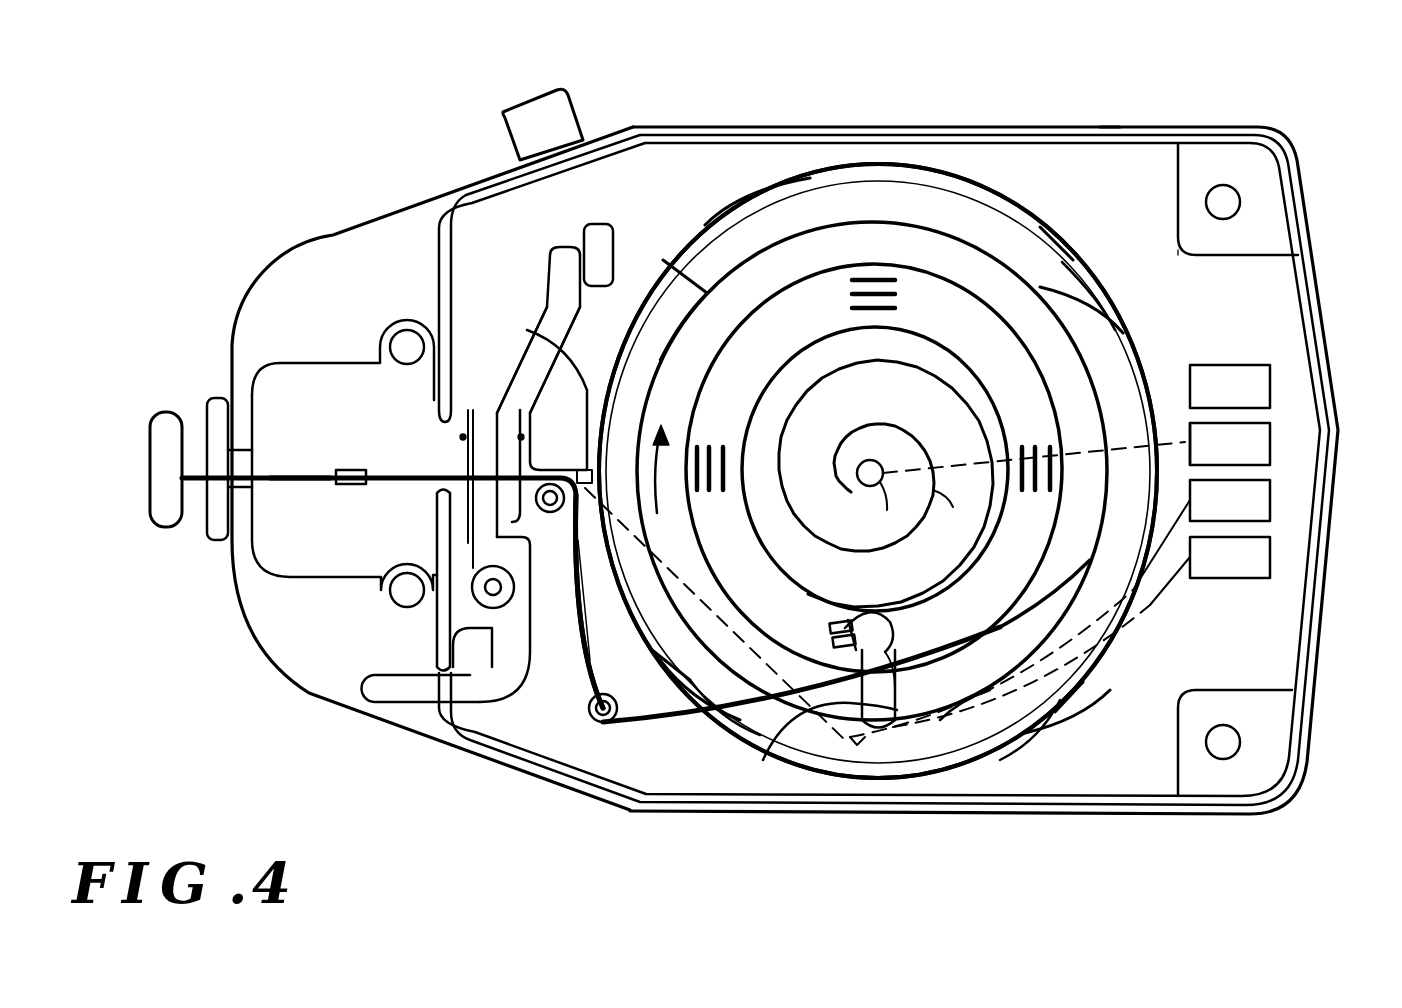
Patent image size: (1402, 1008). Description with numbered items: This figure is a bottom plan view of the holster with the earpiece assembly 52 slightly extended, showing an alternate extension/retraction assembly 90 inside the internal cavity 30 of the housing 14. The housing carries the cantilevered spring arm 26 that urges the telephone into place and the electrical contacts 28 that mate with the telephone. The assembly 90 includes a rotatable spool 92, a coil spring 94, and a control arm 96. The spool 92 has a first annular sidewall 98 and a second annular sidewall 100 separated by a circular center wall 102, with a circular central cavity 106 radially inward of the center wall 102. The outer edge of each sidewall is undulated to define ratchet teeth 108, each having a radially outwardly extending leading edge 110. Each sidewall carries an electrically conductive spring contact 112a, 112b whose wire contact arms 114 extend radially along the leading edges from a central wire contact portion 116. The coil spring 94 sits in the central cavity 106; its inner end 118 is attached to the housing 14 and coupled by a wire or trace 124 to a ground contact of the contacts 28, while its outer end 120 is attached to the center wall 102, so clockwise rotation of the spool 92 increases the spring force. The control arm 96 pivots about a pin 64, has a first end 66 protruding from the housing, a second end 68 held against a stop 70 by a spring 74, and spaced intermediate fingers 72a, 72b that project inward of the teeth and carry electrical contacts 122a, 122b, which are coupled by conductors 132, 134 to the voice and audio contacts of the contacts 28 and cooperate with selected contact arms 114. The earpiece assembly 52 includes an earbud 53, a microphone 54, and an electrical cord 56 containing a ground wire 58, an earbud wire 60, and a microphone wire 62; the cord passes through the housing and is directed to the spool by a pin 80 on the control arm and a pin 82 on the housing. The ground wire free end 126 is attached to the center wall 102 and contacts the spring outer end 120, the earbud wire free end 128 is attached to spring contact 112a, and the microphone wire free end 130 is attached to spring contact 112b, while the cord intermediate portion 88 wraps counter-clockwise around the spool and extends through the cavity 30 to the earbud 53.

The housing 14 is at (1104, 120).
The cantilevered spring arm 26 is at (212, 405).
The electrical contacts 28 is at (1276, 441).
The internal cavity 30 is at (1224, 271).
The earpiece assembly 52 is at (333, 546).
The earbud 53 is at (165, 478).
The microphone 54 is at (350, 470).
The electrical cord 56 is at (290, 476).
The insulated ground wire 58 is at (885, 612).
The insulated earbud wire 60 is at (833, 637).
The insulated microphone wire 62 is at (851, 622).
The pin 64 is at (485, 586).
The first end 66 is at (376, 686).
The second end 68 is at (548, 258).
The stop 70 is at (598, 240).
The first finger 72a is at (595, 662).
The second finger 72b is at (558, 629).
The spring 74 is at (462, 470).
The pin 80 is at (550, 490).
The pin 82 is at (612, 722).
The intermediate portion 88 is at (667, 718).
The extension/retraction assembly 90 is at (1262, 322).
The spool 92 is at (985, 188).
The coil spring 94 is at (949, 514).
The control arm 96 is at (517, 400).
The first annular sidewall 98 is at (814, 195).
The second annular sidewall 100 is at (900, 195).
The center wall 102 is at (900, 332).
The central cavity 106 is at (886, 483).
The ratchet teeth 108 is at (717, 220).
The leading edge 110 is at (668, 262).
The spring contact 112a is at (958, 712).
The spring contact 112b is at (945, 716).
The wire contact arms 114 is at (697, 258).
The central wire contact portion 116 is at (872, 224).
The inner end 118 is at (881, 500).
The outer end 120 is at (905, 618).
The electrical contact 122a is at (504, 352).
The electrical contact 122b is at (528, 331).
The wire, circuit board trace, etc. 124 is at (1158, 425).
The free end 126 is at (880, 635).
The free end 128 is at (782, 740).
The free end 130 is at (884, 742).
The wire, circuit board trace, etc. 132 is at (1175, 568).
The wire, circuit board trace, etc. 134 is at (1023, 618).